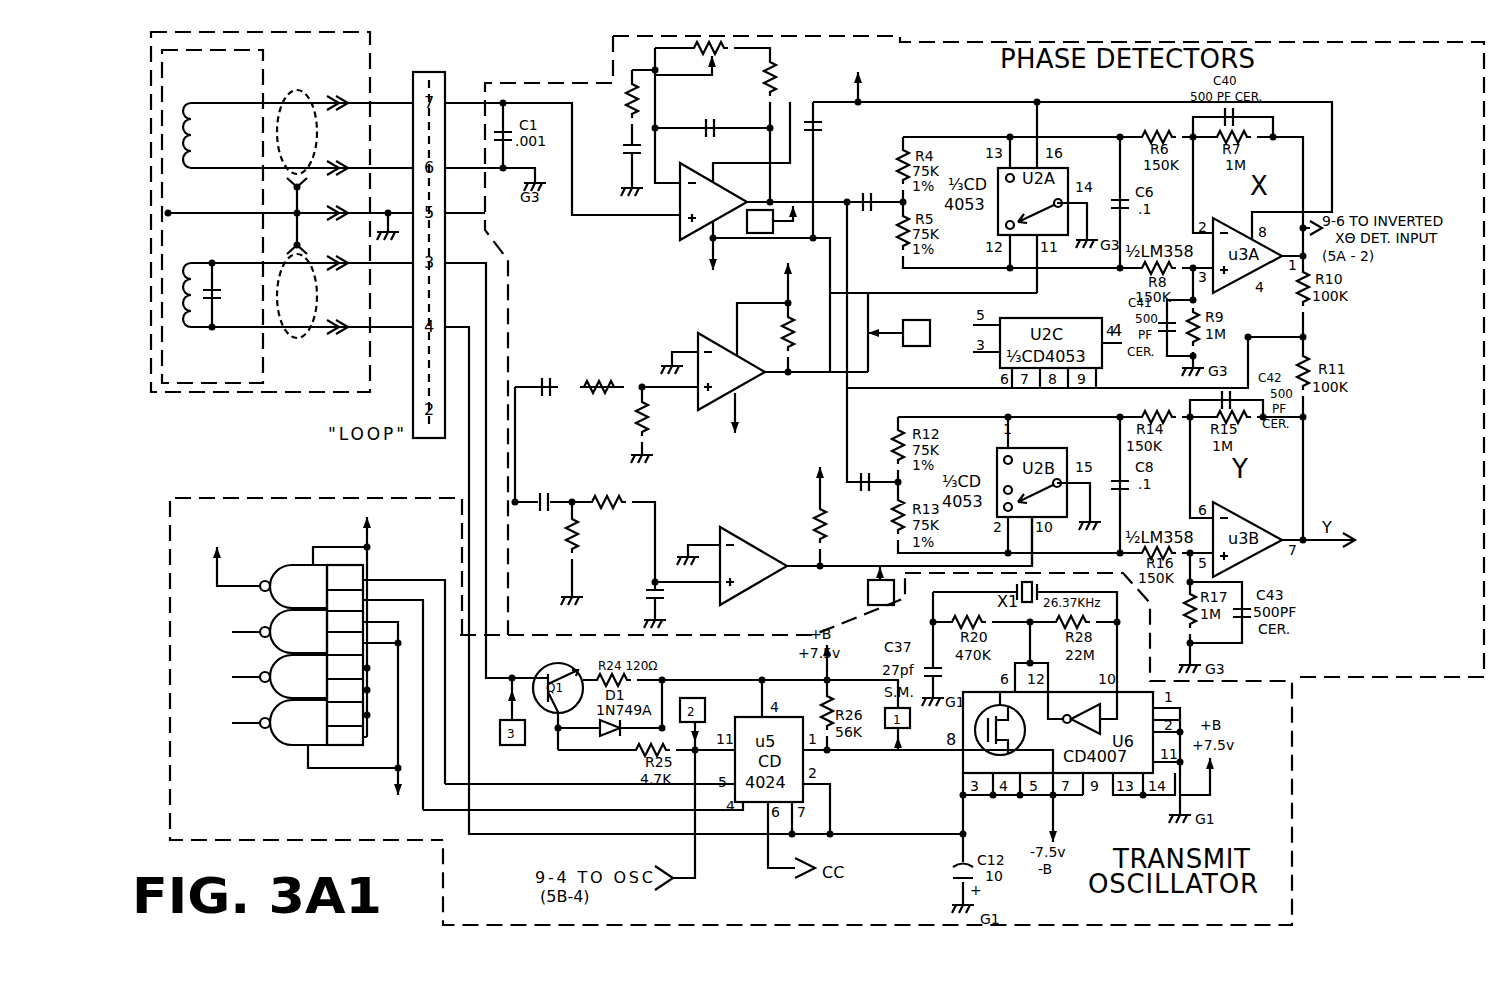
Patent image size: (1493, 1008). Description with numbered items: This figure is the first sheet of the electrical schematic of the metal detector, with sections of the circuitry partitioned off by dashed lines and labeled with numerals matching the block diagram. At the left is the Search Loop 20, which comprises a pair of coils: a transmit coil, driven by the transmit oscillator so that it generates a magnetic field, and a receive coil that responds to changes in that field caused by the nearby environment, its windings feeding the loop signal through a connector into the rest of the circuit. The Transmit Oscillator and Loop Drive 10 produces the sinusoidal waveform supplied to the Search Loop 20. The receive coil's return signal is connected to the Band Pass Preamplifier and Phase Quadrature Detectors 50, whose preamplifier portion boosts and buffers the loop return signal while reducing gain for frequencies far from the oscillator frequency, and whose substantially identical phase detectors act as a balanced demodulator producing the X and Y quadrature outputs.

The Transmit Oscillator and Loop Drive 10 is at (322, 498).
The Search Loop 20 is at (323, 393).
The Band Pass Preamplifier and Phase Quadrature Detectors 50 is at (507, 432).